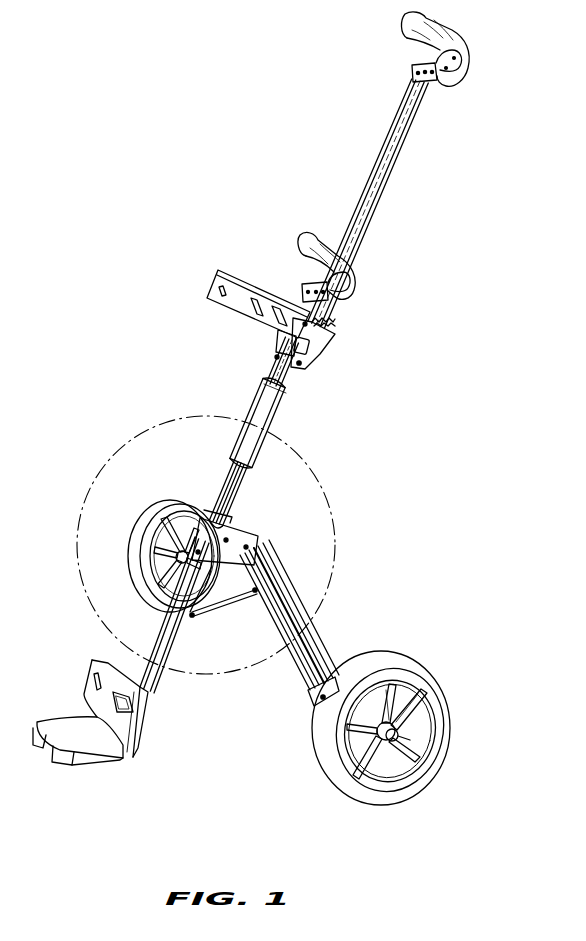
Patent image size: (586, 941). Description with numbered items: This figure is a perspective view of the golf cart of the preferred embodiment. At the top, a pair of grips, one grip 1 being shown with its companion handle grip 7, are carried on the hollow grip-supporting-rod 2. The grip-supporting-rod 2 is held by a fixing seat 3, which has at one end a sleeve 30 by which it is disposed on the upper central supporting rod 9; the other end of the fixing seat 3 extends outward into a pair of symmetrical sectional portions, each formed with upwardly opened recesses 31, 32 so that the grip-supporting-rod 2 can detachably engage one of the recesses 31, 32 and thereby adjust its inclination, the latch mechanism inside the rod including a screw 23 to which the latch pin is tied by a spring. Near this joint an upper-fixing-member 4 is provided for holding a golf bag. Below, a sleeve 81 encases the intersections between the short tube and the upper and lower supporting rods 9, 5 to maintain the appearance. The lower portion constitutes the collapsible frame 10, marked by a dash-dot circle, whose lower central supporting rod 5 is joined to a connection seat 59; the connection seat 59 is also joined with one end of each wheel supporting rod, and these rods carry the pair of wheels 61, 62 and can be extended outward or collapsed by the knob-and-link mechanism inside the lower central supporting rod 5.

The handle grip 7 is at (437, 32).
The grip 1 is at (316, 248).
The grip-supporting-rod 2 is at (366, 222).
The upper-fixing-member 4 is at (218, 270).
The fixing seat 3 is at (323, 343).
The recess 32 is at (330, 319).
The recess 31 is at (336, 330).
The sleeve 30 is at (277, 340).
The upper central supporting rod 9 is at (280, 364).
The screw 23 is at (300, 364).
The lower central supporting rod 5 is at (243, 493).
The sleeve 81 is at (265, 412).
The collapsible frame 10 is at (314, 465).
The connection seat 59 is at (247, 533).
The wheel 62 is at (168, 512).
The wheel 61 is at (395, 668).